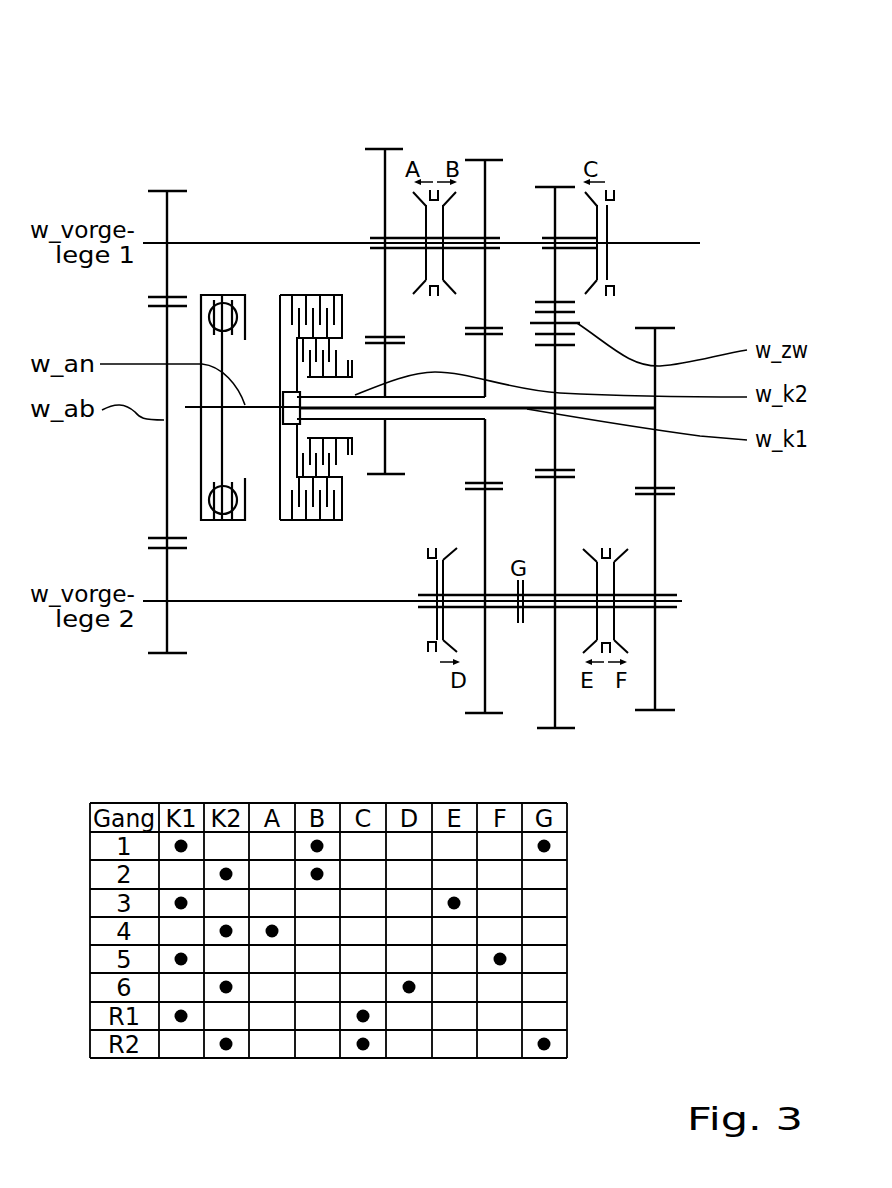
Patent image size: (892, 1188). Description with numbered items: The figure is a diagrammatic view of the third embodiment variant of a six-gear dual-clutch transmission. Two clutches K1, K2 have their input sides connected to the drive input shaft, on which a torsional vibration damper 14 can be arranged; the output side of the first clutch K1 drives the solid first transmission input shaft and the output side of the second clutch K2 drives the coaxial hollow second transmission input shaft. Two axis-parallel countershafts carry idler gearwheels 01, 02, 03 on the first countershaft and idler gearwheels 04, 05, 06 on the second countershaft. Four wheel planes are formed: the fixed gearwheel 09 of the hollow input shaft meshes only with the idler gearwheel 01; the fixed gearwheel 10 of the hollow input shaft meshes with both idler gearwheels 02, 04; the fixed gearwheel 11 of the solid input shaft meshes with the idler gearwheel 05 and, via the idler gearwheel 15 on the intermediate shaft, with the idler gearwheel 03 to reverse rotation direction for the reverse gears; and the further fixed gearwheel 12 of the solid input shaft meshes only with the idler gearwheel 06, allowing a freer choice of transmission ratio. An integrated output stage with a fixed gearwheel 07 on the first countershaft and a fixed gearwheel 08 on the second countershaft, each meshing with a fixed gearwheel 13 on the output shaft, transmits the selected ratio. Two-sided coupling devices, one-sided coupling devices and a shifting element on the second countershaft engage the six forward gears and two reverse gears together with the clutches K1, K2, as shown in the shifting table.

The idler gearwheel 01 is at (384, 149).
The idler gearwheel 02 is at (485, 160).
The idler gearwheel 03 is at (548, 187).
The idler gearwheel 04 is at (480, 713).
The idler gearwheel 05 is at (572, 693).
The idler gearwheel 06 is at (648, 717).
The fixed gearwheel 07 is at (167, 190).
The fixed gearwheel 08 is at (167, 653).
The fixed gearwheel 09 is at (383, 357).
The fixed gearwheel 10 is at (490, 345).
The fixed gearwheel 11 is at (553, 442).
The fixed gearwheel 12 is at (657, 350).
The fixed gearwheel 13 is at (172, 322).
The torsional vibration damper 14 is at (233, 522).
The idler gearwheel 15 is at (577, 312).
The first clutch K1 is at (273, 355).
The second clutch K2 is at (247, 303).